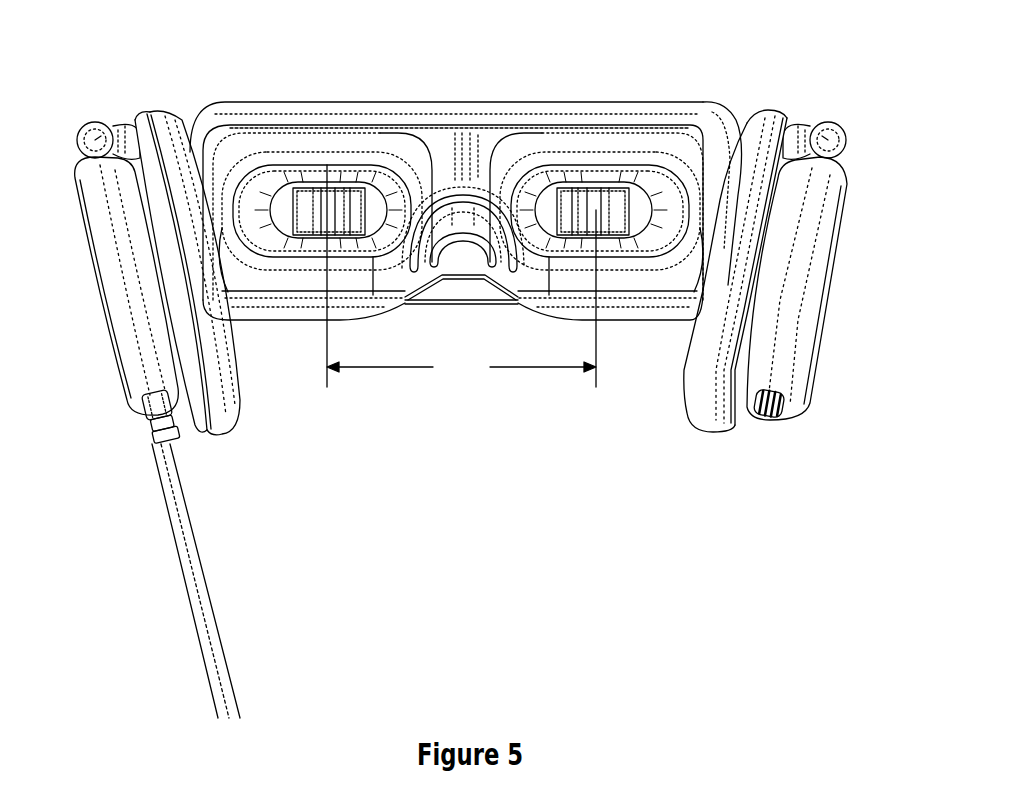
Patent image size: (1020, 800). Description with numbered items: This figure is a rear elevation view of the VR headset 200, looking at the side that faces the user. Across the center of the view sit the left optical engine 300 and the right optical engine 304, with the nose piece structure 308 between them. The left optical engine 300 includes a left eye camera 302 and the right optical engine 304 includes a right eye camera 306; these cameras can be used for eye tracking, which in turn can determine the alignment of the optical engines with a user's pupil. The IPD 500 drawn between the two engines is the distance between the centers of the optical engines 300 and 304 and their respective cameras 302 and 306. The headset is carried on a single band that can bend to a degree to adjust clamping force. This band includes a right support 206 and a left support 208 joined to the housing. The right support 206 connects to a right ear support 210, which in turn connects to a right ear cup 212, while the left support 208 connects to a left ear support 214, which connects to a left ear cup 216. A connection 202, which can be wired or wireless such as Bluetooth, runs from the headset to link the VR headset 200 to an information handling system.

The VR headset 200 is at (786, 34).
The connection 202 is at (170, 527).
The right support 206 is at (834, 135).
The left support 208 is at (78, 134).
The right ear support 210 is at (247, 124).
The right ear cup 212 is at (725, 421).
The left ear support 214 is at (123, 357).
The left ear cup 216 is at (228, 408).
The left optical engine 300 is at (268, 180).
The left eye camera 302 is at (320, 188).
The right optical engine 304 is at (657, 170).
The right eye camera 306 is at (580, 207).
The nose piece structure 308 is at (463, 220).
The IPD 500 is at (481, 376).